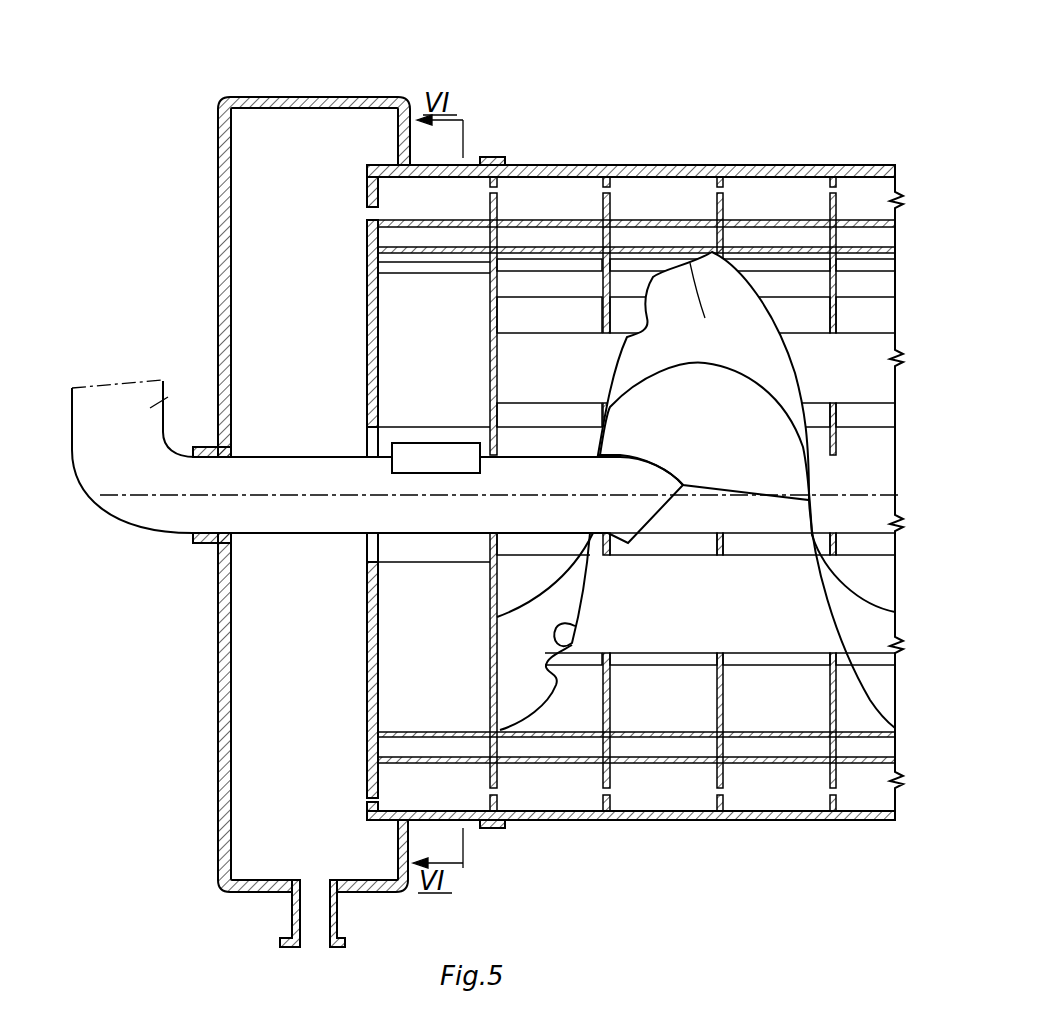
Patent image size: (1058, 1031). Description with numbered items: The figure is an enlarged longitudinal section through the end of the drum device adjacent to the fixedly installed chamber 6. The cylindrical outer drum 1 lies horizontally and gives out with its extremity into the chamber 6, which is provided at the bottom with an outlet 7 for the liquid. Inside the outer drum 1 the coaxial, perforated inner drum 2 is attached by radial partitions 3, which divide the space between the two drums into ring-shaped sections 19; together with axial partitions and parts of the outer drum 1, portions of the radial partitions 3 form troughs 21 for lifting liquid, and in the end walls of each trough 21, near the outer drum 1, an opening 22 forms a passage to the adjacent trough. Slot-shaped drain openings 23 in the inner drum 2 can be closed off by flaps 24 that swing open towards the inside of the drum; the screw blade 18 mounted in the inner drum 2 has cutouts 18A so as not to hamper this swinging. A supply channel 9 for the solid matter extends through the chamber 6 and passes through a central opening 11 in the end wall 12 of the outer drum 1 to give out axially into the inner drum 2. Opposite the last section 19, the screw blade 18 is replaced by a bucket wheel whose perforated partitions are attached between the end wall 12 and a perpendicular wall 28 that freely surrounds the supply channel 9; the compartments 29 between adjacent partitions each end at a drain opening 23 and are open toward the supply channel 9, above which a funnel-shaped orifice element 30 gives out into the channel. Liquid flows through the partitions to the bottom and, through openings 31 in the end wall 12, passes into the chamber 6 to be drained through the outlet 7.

The outer drum 1 is at (560, 163).
The inner drum 2 is at (779, 243).
The radial partitions 3 is at (760, 165).
The chamber 6 is at (285, 97).
The outlet 7 is at (290, 926).
The supply channel 9 is at (175, 380).
The central opening 11 is at (367, 547).
The end wall 12 is at (368, 190).
The screw blade 18 is at (880, 693).
The cutouts 18A is at (648, 328).
The ring-shaped sections 19 is at (535, 197).
The troughs 21 is at (543, 817).
The opening 22 is at (497, 187).
The drain opening 23 is at (525, 327).
The flap 24 is at (872, 263).
The perpendicular wall 28 is at (487, 830).
The compartment 29 is at (398, 313).
The funnel-shaped orifice element 30 is at (424, 455).
The openings 31 is at (370, 213).